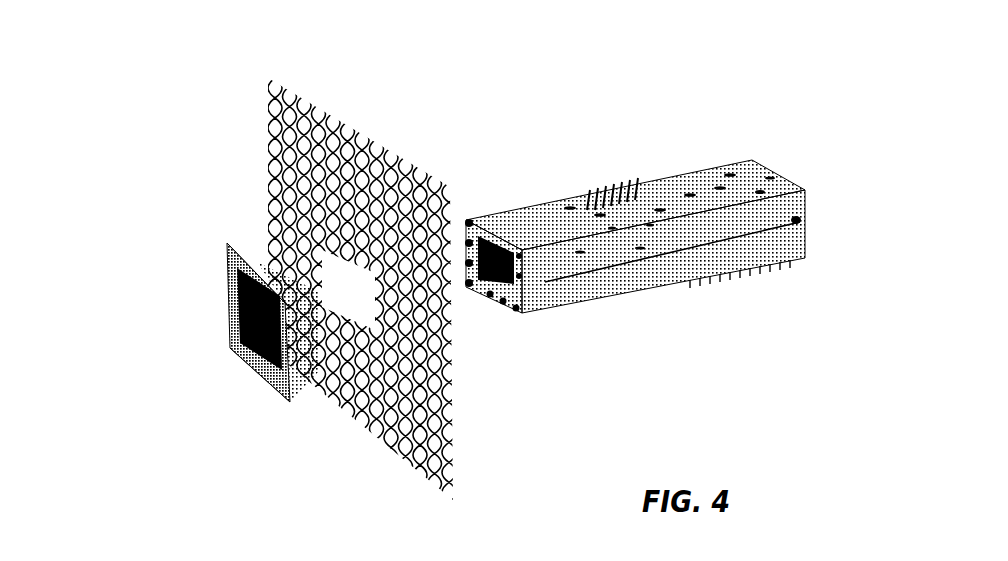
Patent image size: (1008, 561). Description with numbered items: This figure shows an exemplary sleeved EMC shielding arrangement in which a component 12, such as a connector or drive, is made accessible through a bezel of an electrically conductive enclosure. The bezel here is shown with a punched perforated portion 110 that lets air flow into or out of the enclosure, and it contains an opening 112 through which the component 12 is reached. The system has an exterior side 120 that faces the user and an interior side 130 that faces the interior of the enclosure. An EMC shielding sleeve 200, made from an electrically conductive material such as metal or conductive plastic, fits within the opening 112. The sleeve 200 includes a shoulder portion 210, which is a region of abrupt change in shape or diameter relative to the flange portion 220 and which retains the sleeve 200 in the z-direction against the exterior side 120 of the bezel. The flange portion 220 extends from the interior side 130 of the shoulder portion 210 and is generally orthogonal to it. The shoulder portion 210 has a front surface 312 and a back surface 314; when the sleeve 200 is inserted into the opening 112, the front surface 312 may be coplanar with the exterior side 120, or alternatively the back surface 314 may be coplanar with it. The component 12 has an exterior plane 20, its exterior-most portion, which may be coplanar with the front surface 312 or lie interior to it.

The punched perforated portion 110 is at (275, 138).
The opening 112 is at (353, 310).
The exterior side 120 is at (160, 498).
The interior side 130 is at (635, 207).
The component 12 is at (660, 260).
The exterior plane 20 is at (488, 300).
The EMC shielding sleeve 200 is at (260, 344).
The shoulder portion 210 is at (215, 297).
The flange portion 220 is at (302, 343).
The front surface 312 is at (242, 363).
The back surface 314 is at (249, 236).